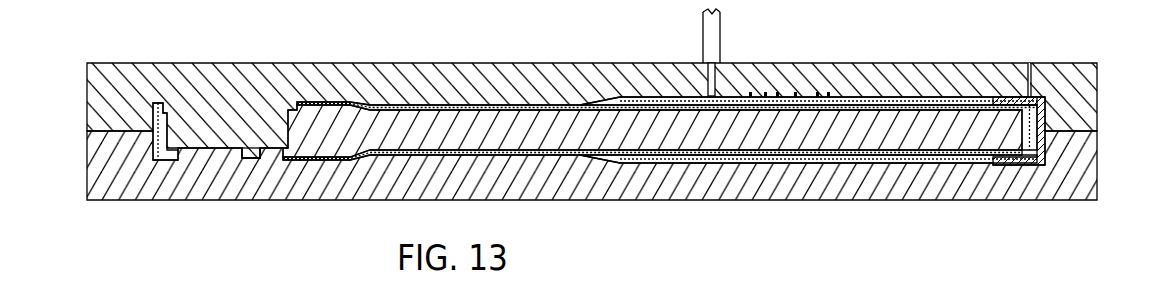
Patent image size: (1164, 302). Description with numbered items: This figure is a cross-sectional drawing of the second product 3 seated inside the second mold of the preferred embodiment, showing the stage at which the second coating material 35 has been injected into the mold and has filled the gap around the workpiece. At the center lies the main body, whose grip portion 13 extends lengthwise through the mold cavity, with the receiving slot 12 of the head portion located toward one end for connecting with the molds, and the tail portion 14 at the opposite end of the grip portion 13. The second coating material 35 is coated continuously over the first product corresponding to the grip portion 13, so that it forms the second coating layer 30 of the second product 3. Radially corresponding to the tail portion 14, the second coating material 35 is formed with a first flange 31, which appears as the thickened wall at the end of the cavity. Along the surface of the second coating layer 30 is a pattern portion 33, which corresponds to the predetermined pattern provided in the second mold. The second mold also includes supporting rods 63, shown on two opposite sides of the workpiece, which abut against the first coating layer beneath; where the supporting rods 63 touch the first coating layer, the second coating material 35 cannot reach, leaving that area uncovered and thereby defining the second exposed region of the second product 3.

The receiving slot 12 is at (215, 124).
The second product 3 is at (413, 84).
The grip portion 13 is at (573, 120).
The pattern portion 33 is at (787, 78).
The supporting rod 63 is at (898, 97).
The tail portion 14 is at (1014, 129).
The second coating material 35 is at (960, 158).
The second coating layer 30 is at (975, 163).
The first flange 31 is at (1040, 165).